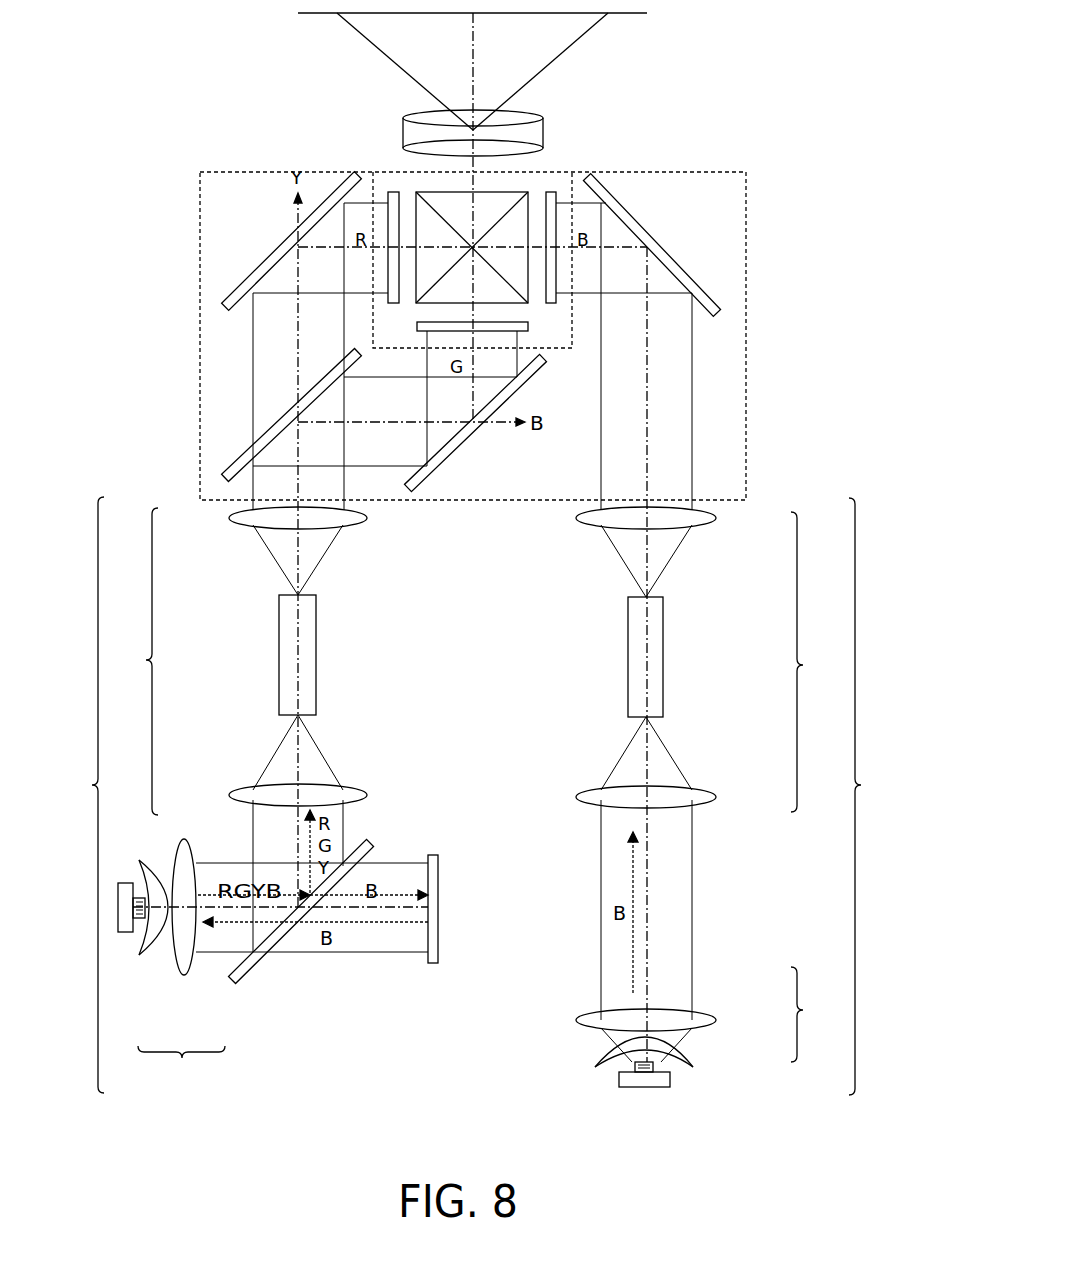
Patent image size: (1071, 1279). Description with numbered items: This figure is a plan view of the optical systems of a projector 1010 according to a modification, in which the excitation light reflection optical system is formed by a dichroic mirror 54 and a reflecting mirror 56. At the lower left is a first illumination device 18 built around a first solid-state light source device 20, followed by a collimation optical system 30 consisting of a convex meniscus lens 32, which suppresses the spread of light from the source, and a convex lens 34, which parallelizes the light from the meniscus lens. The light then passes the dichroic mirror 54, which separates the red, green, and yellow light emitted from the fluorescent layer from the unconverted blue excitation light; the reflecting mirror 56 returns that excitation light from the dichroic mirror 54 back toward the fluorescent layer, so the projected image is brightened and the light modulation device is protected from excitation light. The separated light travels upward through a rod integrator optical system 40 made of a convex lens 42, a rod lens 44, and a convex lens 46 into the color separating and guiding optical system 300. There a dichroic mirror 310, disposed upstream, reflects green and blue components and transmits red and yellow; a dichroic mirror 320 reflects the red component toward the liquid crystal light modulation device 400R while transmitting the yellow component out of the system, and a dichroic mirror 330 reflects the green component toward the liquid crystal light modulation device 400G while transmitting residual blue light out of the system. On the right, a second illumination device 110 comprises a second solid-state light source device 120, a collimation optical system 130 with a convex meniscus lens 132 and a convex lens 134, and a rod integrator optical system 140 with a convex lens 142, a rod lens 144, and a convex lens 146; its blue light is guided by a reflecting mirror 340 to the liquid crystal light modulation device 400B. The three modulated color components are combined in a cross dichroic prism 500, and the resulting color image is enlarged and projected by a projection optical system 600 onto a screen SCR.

The projector 1010 is at (827, 30).
The screen SCR is at (632, 14).
The projection optical system 600 is at (403, 133).
The cross dichroic prism 500 is at (495, 192).
The liquid crystal light modulation device 400R is at (393, 192).
The liquid crystal light modulation device 400G is at (530, 328).
The liquid crystal light modulation device 400B is at (551, 192).
The color separating and guiding optical system 300 is at (199, 343).
The dichroic mirror 310 is at (228, 470).
The dichroic mirror 320 is at (236, 296).
The dichroic mirror 330 is at (458, 452).
The reflecting mirror 340 is at (710, 300).
The first illumination device 18 is at (81, 795).
The first solid-state light source device 20 is at (127, 950).
The collimation optical system 30 is at (181, 1068).
The convex meniscus lens 32 is at (155, 962).
The convex lens 34 is at (190, 978).
The rod integrator optical system 40 is at (134, 661).
The convex lens 42 is at (228, 795).
The rod lens 44 is at (279, 635).
The convex lens 46 is at (228, 516).
The dichroic mirror 54 is at (372, 848).
The reflecting mirror 56 is at (433, 855).
The second illumination device 110 is at (875, 796).
The second solid-state light source device 120 is at (684, 1077).
The collimation optical system 130 is at (819, 1014).
The convex meniscus lens 132 is at (688, 1057).
The convex lens 134 is at (716, 1018).
The rod integrator optical system 140 is at (819, 662).
The convex lens 142 is at (716, 797).
The rod lens 144 is at (663, 640).
The convex lens 146 is at (716, 520).